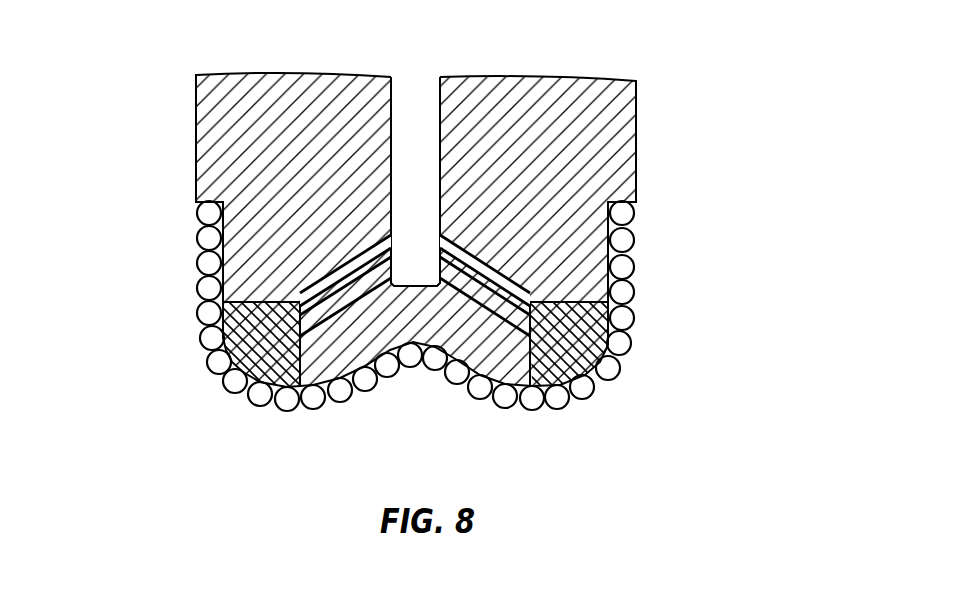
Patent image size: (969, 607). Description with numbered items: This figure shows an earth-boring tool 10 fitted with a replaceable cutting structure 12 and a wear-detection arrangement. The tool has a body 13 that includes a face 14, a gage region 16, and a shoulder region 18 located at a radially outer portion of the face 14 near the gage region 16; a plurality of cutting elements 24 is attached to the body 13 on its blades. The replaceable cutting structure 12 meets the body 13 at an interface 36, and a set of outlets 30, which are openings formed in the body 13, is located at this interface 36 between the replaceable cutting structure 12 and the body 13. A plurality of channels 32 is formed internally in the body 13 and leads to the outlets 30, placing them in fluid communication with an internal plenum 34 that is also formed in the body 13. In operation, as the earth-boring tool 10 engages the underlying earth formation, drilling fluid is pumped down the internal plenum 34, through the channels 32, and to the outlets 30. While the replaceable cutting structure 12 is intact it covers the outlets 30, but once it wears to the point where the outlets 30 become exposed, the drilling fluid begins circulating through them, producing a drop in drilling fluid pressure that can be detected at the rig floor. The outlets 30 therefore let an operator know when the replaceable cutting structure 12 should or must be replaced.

The earth-boring tool 10 is at (408, 243).
The replaceable cutting structure 12 is at (222, 309).
The body 13 is at (266, 120).
The face 14 is at (424, 404).
The gage region 16 is at (174, 200).
The shoulder region 18 is at (243, 419).
The cutting elements 24 is at (622, 292).
The outlets 30 is at (248, 388).
The channels 32 is at (328, 286).
The internal plenum 34 is at (422, 130).
The interface 36 is at (563, 297).